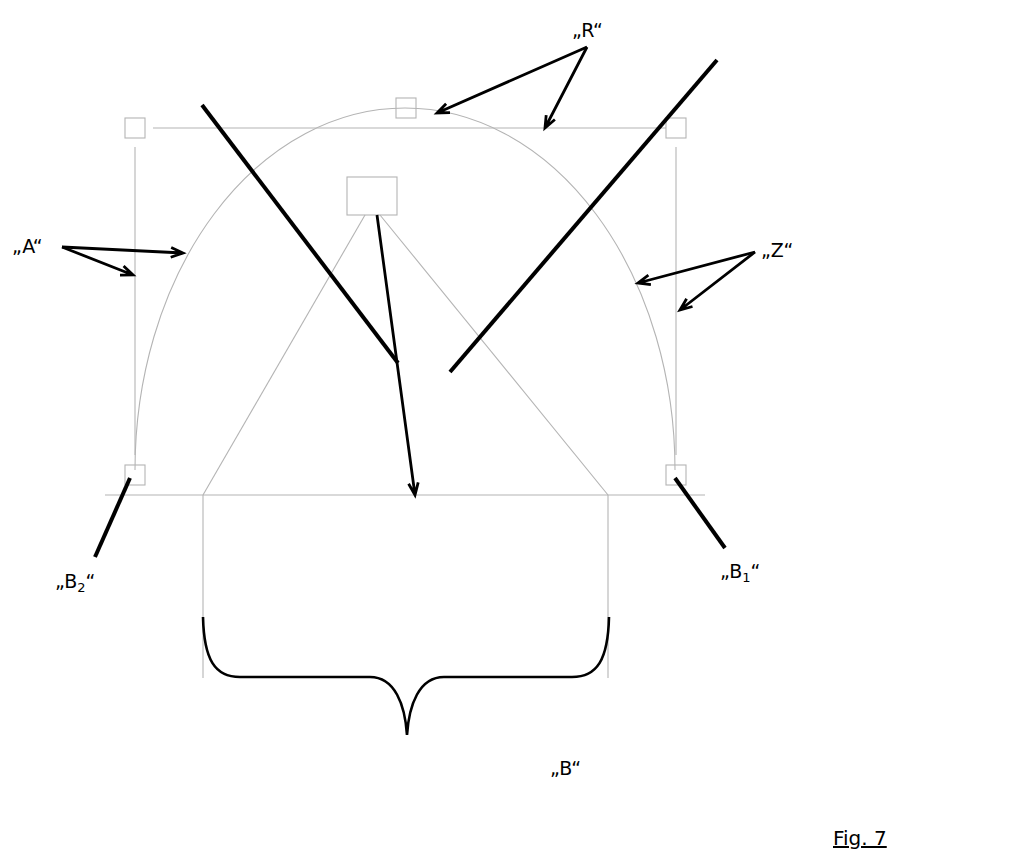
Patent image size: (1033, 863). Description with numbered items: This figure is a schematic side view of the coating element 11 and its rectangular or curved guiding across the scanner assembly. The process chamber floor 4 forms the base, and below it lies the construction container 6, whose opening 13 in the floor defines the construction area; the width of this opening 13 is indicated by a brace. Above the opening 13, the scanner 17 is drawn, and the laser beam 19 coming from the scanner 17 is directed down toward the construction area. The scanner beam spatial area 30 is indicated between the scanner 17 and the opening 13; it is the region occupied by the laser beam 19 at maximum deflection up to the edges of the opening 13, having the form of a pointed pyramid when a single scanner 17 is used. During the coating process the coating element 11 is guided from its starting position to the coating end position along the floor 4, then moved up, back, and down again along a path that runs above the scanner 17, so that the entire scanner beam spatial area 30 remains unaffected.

The process chamber floor 4 is at (178, 495).
The construction container 6 is at (555, 598).
The coating element 11 is at (683, 472).
The opening of the construction container 13 is at (406, 689).
The scanner 17 is at (405, 336).
The laser beam 19 is at (291, 218).
The scanner beam spatial area 30 is at (596, 206).